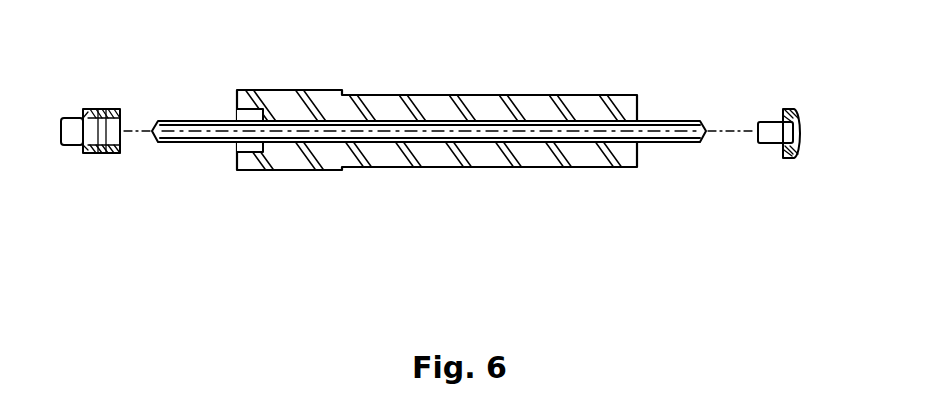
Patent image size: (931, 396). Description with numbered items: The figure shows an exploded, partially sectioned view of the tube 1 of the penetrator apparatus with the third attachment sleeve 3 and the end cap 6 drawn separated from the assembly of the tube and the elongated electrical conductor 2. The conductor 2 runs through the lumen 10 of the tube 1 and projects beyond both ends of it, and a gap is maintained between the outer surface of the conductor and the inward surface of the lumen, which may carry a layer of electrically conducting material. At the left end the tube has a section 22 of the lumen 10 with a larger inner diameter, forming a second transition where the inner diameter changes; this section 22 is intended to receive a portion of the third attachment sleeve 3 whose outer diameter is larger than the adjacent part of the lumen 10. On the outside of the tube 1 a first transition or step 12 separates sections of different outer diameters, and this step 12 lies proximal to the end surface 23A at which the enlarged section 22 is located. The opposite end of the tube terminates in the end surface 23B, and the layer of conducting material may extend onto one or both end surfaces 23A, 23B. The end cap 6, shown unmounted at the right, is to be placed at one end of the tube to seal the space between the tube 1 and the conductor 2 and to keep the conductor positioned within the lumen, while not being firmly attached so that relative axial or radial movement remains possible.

The tube 1 is at (577, 96).
The electrical conductor 2 is at (683, 126).
The third attachment sleeve 3 is at (110, 106).
The end cap 6 is at (795, 158).
The lumen 10 is at (297, 143).
The first transition or step 12 is at (343, 90).
The section of the lumen 22 is at (237, 150).
The end surface 23A is at (237, 165).
The end surface 23B is at (643, 162).